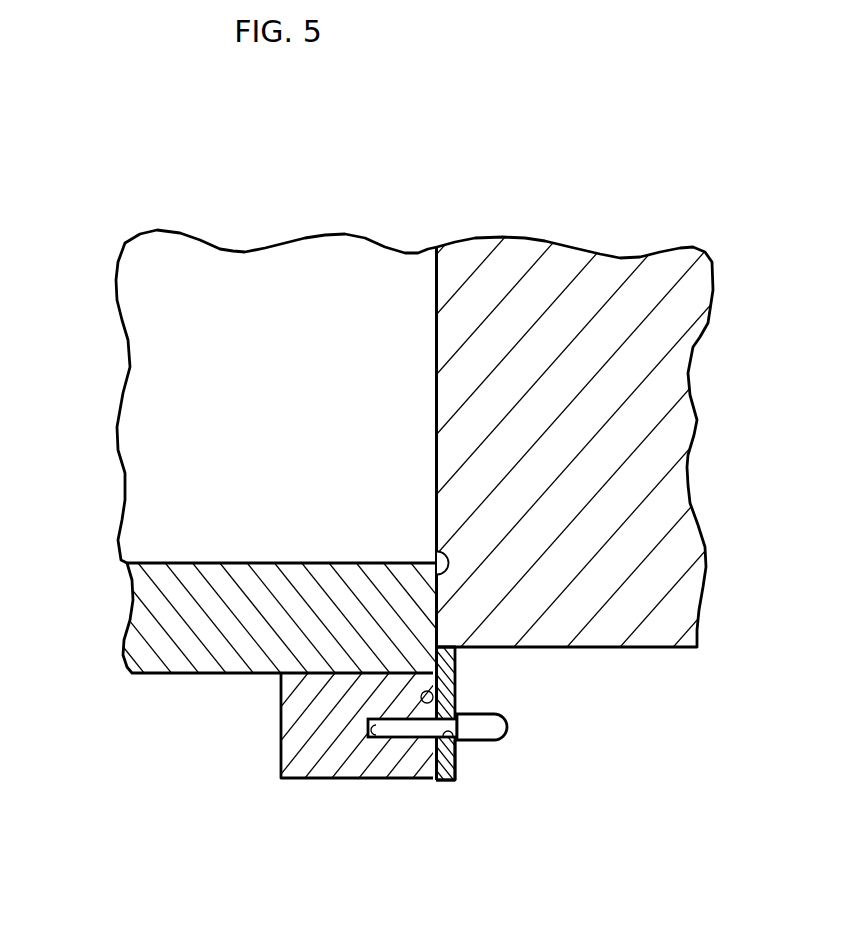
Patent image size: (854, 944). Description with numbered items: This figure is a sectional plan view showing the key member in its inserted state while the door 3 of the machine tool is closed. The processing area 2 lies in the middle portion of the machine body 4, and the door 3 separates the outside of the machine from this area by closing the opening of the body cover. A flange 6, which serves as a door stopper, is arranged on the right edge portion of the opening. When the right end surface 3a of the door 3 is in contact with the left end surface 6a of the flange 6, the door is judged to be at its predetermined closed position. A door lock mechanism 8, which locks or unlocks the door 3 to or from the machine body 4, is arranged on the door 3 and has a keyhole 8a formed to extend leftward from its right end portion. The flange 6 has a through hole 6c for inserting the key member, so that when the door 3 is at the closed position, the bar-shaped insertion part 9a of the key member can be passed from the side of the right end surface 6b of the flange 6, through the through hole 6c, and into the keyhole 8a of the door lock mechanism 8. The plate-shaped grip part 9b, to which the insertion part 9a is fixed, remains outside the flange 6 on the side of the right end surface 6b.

The processing area 2 is at (233, 258).
The door 3 is at (133, 623).
The right end surface 3a is at (437, 551).
The machine body 4 is at (562, 258).
The flange 6 is at (455, 668).
The left end surface 6a is at (433, 700).
The right end surface 6b is at (455, 771).
The through hole 6c is at (458, 742).
The door lock mechanism 8 is at (283, 718).
The keyhole 8a is at (367, 736).
The insertion part 9a is at (413, 740).
The grip part 9b is at (500, 730).